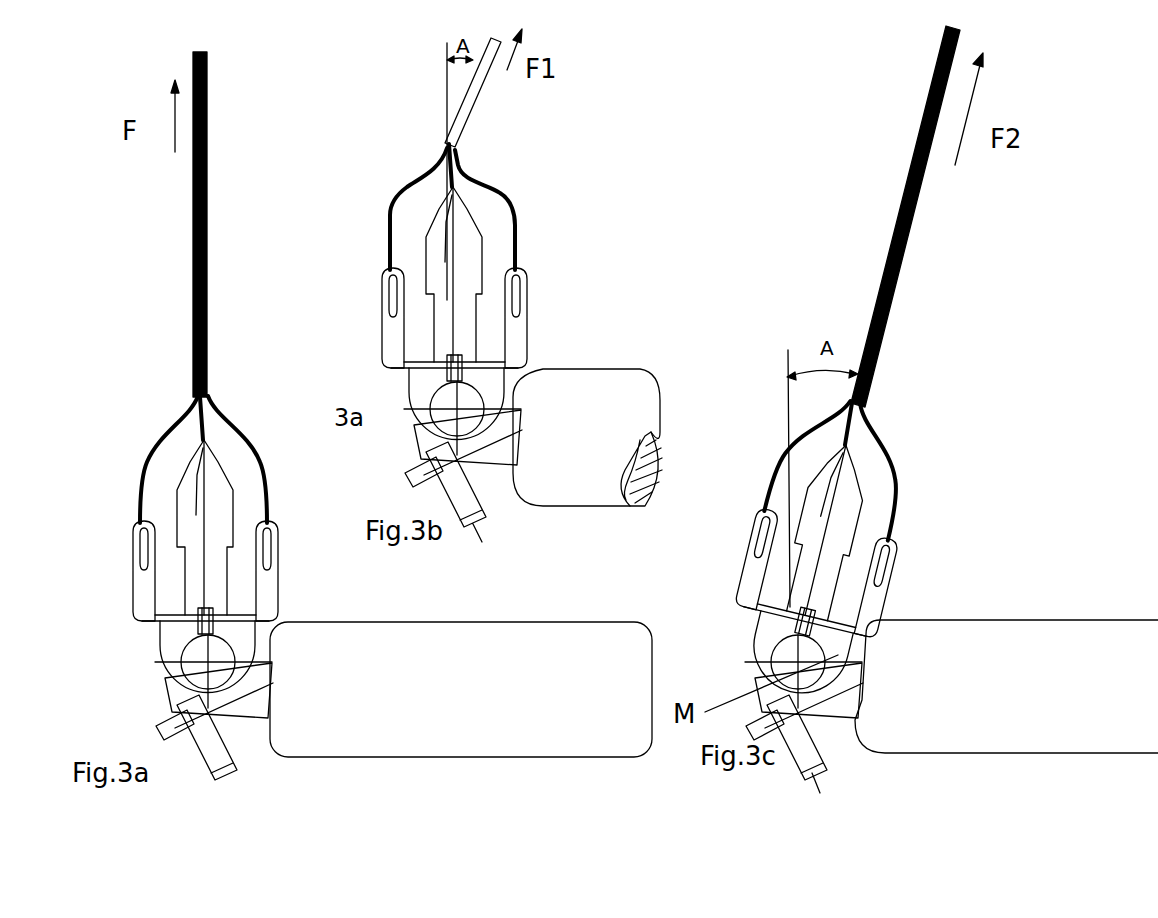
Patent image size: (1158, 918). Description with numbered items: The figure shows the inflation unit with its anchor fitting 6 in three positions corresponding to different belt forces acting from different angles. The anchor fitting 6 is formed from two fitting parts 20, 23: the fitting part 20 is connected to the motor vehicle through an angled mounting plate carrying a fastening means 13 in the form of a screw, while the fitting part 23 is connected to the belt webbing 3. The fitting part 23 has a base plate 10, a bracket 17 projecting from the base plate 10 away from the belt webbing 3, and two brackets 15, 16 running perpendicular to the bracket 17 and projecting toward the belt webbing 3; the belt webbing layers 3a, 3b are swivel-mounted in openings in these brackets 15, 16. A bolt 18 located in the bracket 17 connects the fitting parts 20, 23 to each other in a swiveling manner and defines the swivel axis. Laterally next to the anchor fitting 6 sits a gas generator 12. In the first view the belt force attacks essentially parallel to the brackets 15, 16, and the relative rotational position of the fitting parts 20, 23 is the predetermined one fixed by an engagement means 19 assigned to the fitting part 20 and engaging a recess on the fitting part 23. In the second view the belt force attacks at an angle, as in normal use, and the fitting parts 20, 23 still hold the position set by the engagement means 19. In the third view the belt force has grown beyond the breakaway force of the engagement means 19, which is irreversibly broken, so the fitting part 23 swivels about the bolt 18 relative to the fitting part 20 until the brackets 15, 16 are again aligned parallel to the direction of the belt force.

In FIG. 3A, the belt webbing 3 is at (208, 263).
In FIG. 3B, the belt webbing 3 is at (473, 90).
In FIG. 3C, the belt webbing 3 is at (898, 277).
In FIG. 3A, the belt webbing layer 3a is at (270, 465).
In FIG. 3B, the belt webbing layer 3a is at (480, 182).
In FIG. 3A, the belt webbing layer 3b is at (140, 467).
In FIG. 3B, the belt webbing layer 3b is at (408, 187).
In FIG. 3C, the anchor fitting 6 is at (720, 617).
In FIG. 3A, the base plate 10 is at (183, 617).
In FIG. 3A, the gas generator 12 is at (455, 660).
In FIG. 3A, the fastening means 13 is at (223, 760).
In FIG. 3A, the bracket 15 is at (143, 580).
In FIG. 3C, the bracket 15 is at (817, 572).
In FIG. 3A, the bracket 16 is at (208, 617).
In FIG. 3C, the bracket 16 is at (805, 621).
In FIG. 3A, the bracket 17 is at (175, 662).
In FIG. 3A, the bolt 18 is at (257, 633).
In FIG. 3B, the bolt 18 is at (468, 402).
In FIG. 3C, the bolt 18 is at (798, 657).
In FIG. 3A, the engagement means 19 is at (218, 652).
In FIG. 3B, the engagement means 19 is at (468, 365).
In FIG. 3C, the engagement means 19 is at (823, 620).
In FIG. 3A, the fitting part 20 is at (213, 710).
In FIG. 3B, the fitting part 20 is at (427, 443).
In FIG. 3C, the fitting part 20 is at (812, 693).
In FIG. 3A, the fitting part 23 is at (160, 618).
In FIG. 3B, the fitting part 23 is at (423, 388).
In FIG. 3C, the fitting part 23 is at (805, 618).